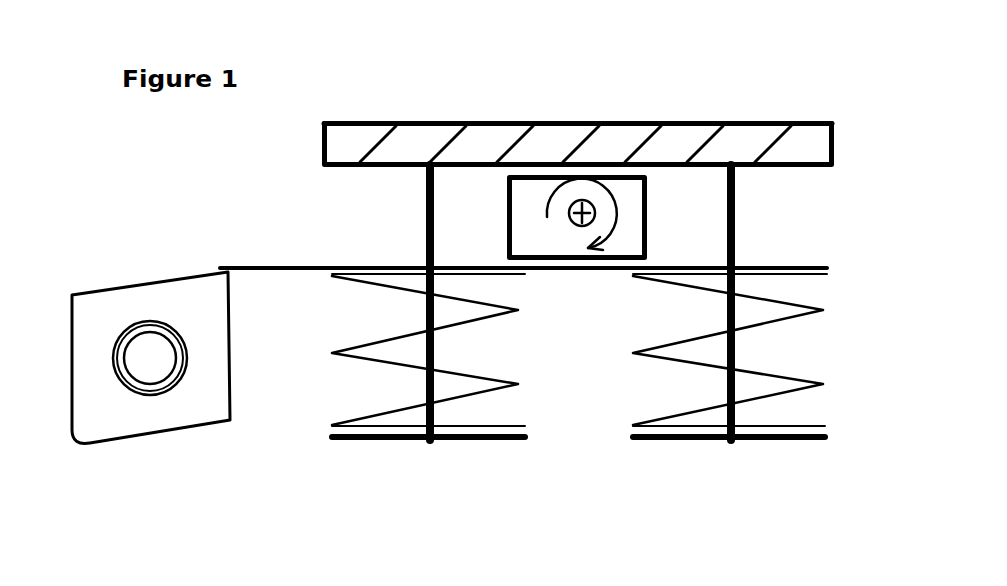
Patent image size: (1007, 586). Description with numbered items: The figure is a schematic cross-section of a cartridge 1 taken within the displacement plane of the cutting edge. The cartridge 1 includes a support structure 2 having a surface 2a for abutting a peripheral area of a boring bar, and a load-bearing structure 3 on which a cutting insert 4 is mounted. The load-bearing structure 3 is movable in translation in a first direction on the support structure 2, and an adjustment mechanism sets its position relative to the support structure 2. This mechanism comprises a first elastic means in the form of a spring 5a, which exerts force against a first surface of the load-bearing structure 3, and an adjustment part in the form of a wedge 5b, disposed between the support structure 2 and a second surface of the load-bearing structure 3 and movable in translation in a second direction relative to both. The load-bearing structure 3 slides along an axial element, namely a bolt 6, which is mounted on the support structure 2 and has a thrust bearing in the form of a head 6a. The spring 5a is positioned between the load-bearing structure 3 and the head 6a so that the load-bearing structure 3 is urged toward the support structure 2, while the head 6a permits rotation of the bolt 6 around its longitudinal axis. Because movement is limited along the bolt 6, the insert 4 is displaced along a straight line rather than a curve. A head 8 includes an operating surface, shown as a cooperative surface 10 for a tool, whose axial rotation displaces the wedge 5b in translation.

The cartridge 1 is at (375, 83).
The support structure 2 is at (745, 140).
The surface of the support structure 2a is at (697, 122).
The load-bearing structure 3 is at (270, 267).
The cutting insert 4 is at (107, 320).
The spring 5a is at (373, 360).
The wedge 5b is at (528, 197).
The bolt 6 is at (425, 210).
The head of the bolt 6a is at (393, 440).
The head 8 is at (592, 203).
The cooperative surface 10 is at (580, 202).